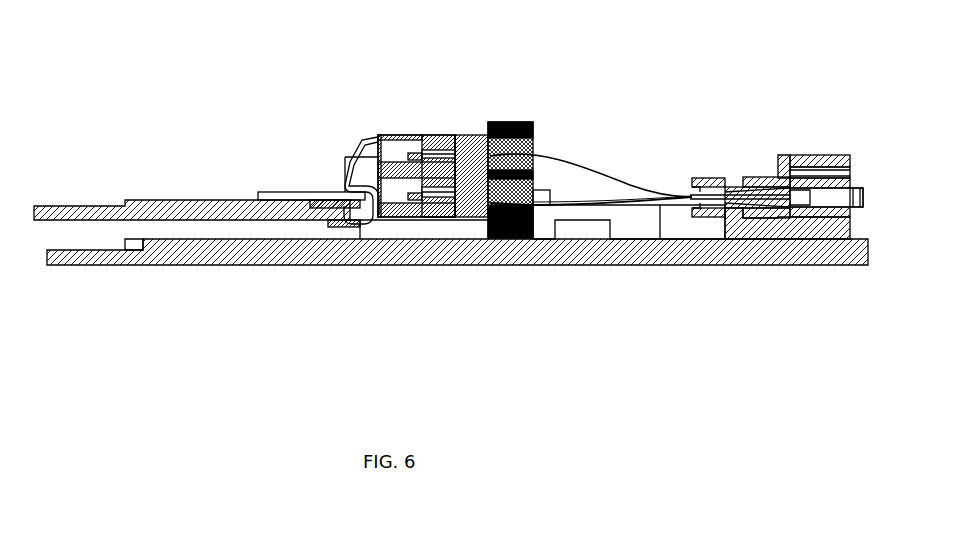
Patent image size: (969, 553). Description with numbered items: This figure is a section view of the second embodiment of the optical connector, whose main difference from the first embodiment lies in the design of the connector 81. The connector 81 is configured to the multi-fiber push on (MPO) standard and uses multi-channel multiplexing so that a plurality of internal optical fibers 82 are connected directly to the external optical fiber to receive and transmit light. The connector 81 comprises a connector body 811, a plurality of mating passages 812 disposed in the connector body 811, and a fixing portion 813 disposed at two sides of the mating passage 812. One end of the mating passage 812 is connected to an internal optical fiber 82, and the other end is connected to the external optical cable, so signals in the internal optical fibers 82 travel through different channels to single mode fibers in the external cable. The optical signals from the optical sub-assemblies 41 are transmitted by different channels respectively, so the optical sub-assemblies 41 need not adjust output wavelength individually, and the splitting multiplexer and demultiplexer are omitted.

The optical sub-assembly 41 is at (441, 130).
The internal optical fiber 82 is at (599, 165).
The connector 81 is at (800, 182).
The connector body 811 is at (835, 155).
The mating passage 812 is at (772, 178).
The fixing portion 813 is at (797, 222).